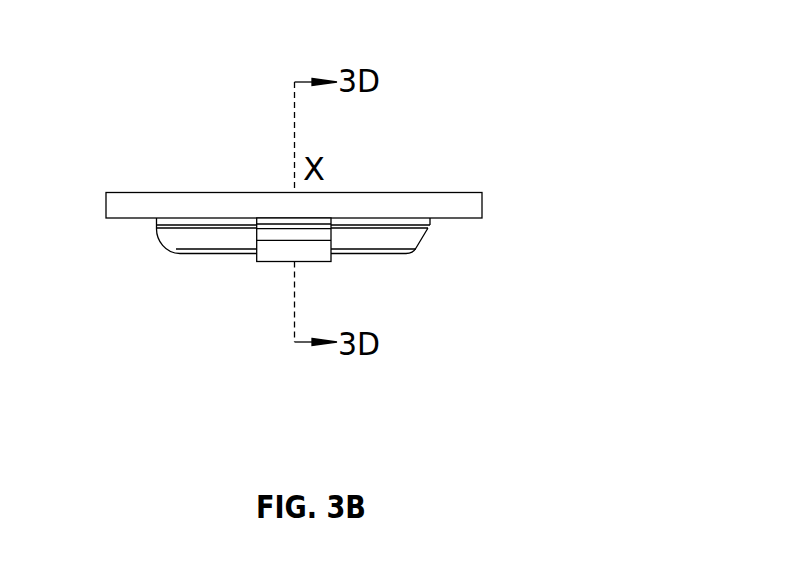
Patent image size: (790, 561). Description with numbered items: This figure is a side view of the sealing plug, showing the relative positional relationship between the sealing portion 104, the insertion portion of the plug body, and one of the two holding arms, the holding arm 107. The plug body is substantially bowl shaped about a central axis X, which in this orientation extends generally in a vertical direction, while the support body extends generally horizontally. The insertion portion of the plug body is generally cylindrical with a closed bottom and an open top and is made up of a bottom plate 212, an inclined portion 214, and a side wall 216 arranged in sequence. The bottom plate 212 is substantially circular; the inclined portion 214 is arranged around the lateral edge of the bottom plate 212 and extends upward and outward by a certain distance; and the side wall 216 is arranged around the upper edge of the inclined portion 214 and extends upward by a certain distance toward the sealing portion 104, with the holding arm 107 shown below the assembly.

The sealing portion 104 is at (465, 207).
The holding arm 107 is at (278, 248).
The bottom plate 212 is at (375, 255).
The inclined portion 214 is at (421, 243).
The side wall 216 is at (431, 221).